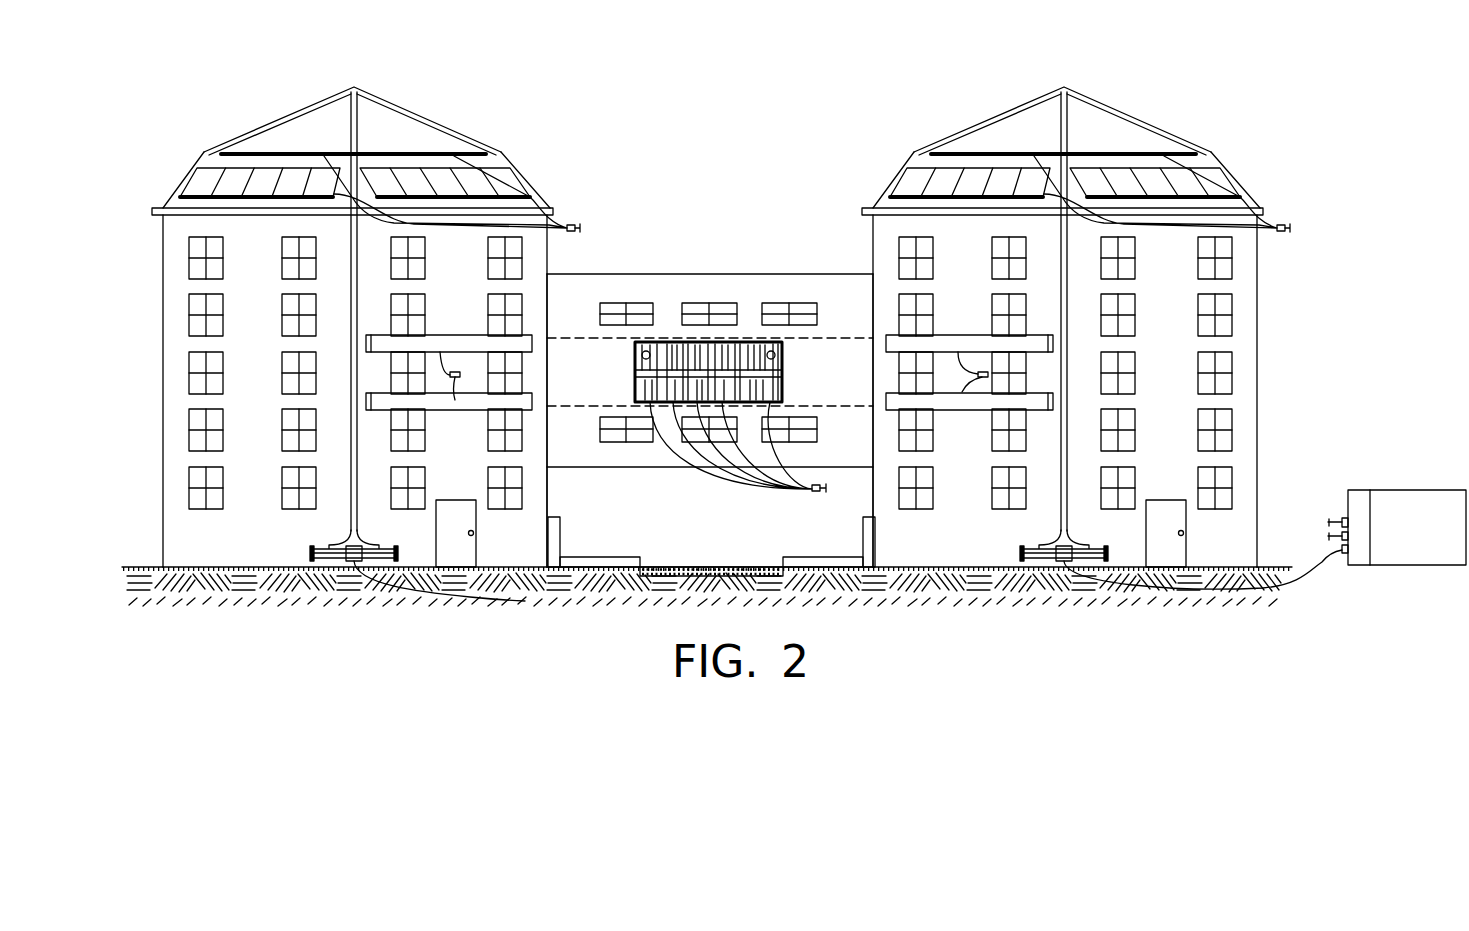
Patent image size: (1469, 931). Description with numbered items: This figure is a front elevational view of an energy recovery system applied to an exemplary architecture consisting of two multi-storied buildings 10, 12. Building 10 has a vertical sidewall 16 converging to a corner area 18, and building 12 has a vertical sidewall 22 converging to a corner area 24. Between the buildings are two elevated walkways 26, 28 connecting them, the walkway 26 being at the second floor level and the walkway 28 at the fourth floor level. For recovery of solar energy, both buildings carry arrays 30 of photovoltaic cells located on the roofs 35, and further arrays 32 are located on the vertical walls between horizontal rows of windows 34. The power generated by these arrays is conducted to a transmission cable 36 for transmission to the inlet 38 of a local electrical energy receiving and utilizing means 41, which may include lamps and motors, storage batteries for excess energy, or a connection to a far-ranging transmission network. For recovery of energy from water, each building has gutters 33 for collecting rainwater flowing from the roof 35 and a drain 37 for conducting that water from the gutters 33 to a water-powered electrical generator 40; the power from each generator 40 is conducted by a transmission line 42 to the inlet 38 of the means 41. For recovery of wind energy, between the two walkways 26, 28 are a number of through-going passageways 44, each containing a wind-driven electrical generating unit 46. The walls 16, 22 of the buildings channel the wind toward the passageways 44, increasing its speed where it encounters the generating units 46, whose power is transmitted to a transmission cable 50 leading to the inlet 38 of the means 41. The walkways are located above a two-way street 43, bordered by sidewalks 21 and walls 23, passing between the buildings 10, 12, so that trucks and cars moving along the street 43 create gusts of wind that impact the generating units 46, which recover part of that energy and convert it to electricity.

The building 10 is at (206, 155).
The building 12 is at (1213, 150).
The vertical sidewall 16 is at (538, 547).
The corner area 18 is at (549, 501).
The sidewalk 21 is at (627, 556).
The vertical sidewall 22 is at (887, 545).
The wall 23 is at (554, 532).
The corner area 24 is at (874, 496).
The elevated walkway 26 is at (613, 453).
The elevated walkway 28 is at (655, 287).
The array of photovoltaic cells 30 is at (291, 135).
The array of photovoltaic cells 32 is at (445, 340).
The gutter 33 is at (243, 215).
The window 34 is at (412, 305).
The roof 35 is at (495, 152).
The transmission cable 36 is at (574, 236).
The drain 37 is at (350, 270).
The inlet 38 is at (1360, 500).
The water-powered electrical generator 40 is at (315, 553).
The electrical energy receiving and utilizing means 41 is at (1418, 502).
The transmission line 42 is at (1322, 563).
The street 43 is at (727, 565).
The through-going passageway 44 is at (650, 362).
The wind-driven electrical generating unit 46 is at (670, 394).
The transmission cable 50 is at (812, 490).